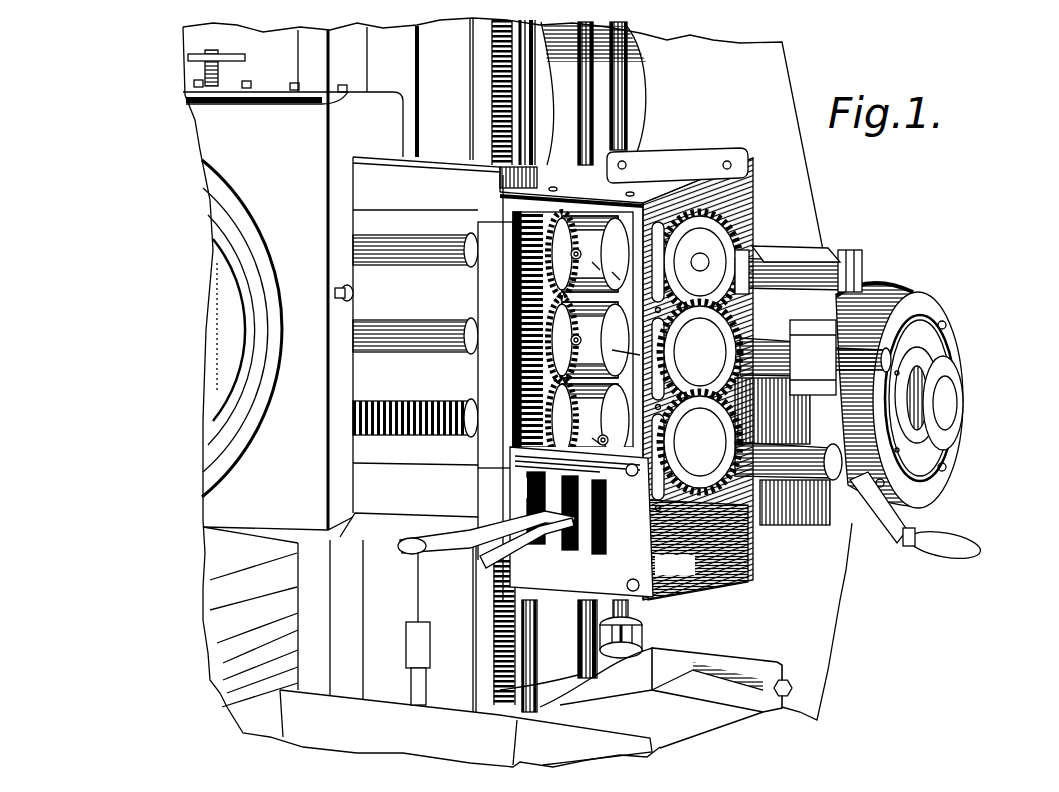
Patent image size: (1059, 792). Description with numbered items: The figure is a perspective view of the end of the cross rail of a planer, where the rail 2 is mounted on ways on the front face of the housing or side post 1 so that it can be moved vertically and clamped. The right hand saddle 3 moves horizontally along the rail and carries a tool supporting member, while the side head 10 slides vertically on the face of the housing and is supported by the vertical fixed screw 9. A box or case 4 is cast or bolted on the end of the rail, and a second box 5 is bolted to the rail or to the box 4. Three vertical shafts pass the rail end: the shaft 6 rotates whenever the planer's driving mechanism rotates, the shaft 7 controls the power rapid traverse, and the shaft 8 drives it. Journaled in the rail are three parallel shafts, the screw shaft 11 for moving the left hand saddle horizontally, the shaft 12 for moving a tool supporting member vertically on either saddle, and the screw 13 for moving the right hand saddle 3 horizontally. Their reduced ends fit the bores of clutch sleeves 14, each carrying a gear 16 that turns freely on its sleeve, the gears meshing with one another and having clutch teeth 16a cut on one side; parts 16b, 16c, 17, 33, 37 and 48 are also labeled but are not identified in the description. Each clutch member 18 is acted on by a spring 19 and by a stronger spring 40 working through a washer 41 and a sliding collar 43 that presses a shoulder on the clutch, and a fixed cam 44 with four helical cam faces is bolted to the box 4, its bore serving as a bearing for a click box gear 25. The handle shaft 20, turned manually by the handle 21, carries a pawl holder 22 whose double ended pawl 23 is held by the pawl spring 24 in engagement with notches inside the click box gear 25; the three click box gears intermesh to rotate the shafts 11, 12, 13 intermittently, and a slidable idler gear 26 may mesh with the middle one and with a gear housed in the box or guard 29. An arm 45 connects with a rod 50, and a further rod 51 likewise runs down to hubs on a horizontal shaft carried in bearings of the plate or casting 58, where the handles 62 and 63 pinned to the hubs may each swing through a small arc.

The housing or side post 1 is at (517, 392).
The cross rail 2 is at (417, 347).
The right hand saddle 3 is at (300, 278).
The box or case 4 is at (626, 374).
The second box 5 is at (785, 256).
The vertical shaft 6 is at (632, 88).
The vertical shaft 7 is at (582, 135).
The vertical shaft 8 is at (540, 52).
The vertical fixed screw 9 is at (490, 101).
The side head 10 is at (692, 648).
The screw shaft 11 is at (412, 244).
The shaft 12 is at (407, 330).
The screw 13 is at (395, 406).
The clutch sleeve 14 is at (683, 233).
The gear 16 is at (520, 258).
The clutch teeth 16a is at (520, 318).
The bearing 16b is at (520, 386).
The bearing 16c is at (520, 428).
The shaft 17 is at (788, 461).
The clutch member 18 is at (700, 395).
The spring 19 is at (702, 447).
The handle shaft 20 is at (815, 357).
The handle 21 is at (903, 542).
The pawl holder 22 is at (740, 245).
The double ended pawl 23 is at (727, 273).
The pawl spring 24 is at (704, 259).
The click box gear 25 is at (714, 232).
The idler gear 26 is at (777, 357).
The box or guard 29 is at (887, 278).
The drum 33 is at (588, 254).
The drum 37 is at (621, 346).
The spring 40 is at (581, 522).
The washer 41 is at (611, 279).
The sliding collar 43 is at (590, 260).
The fixed cam 44 is at (588, 420).
The arm 45 is at (588, 340).
The gear 48 is at (589, 437).
The rod 50 is at (698, 550).
The rod 51 is at (675, 565).
The plate or casting 58 is at (512, 484).
The handle 62 is at (488, 527).
The handle 63 is at (515, 528).